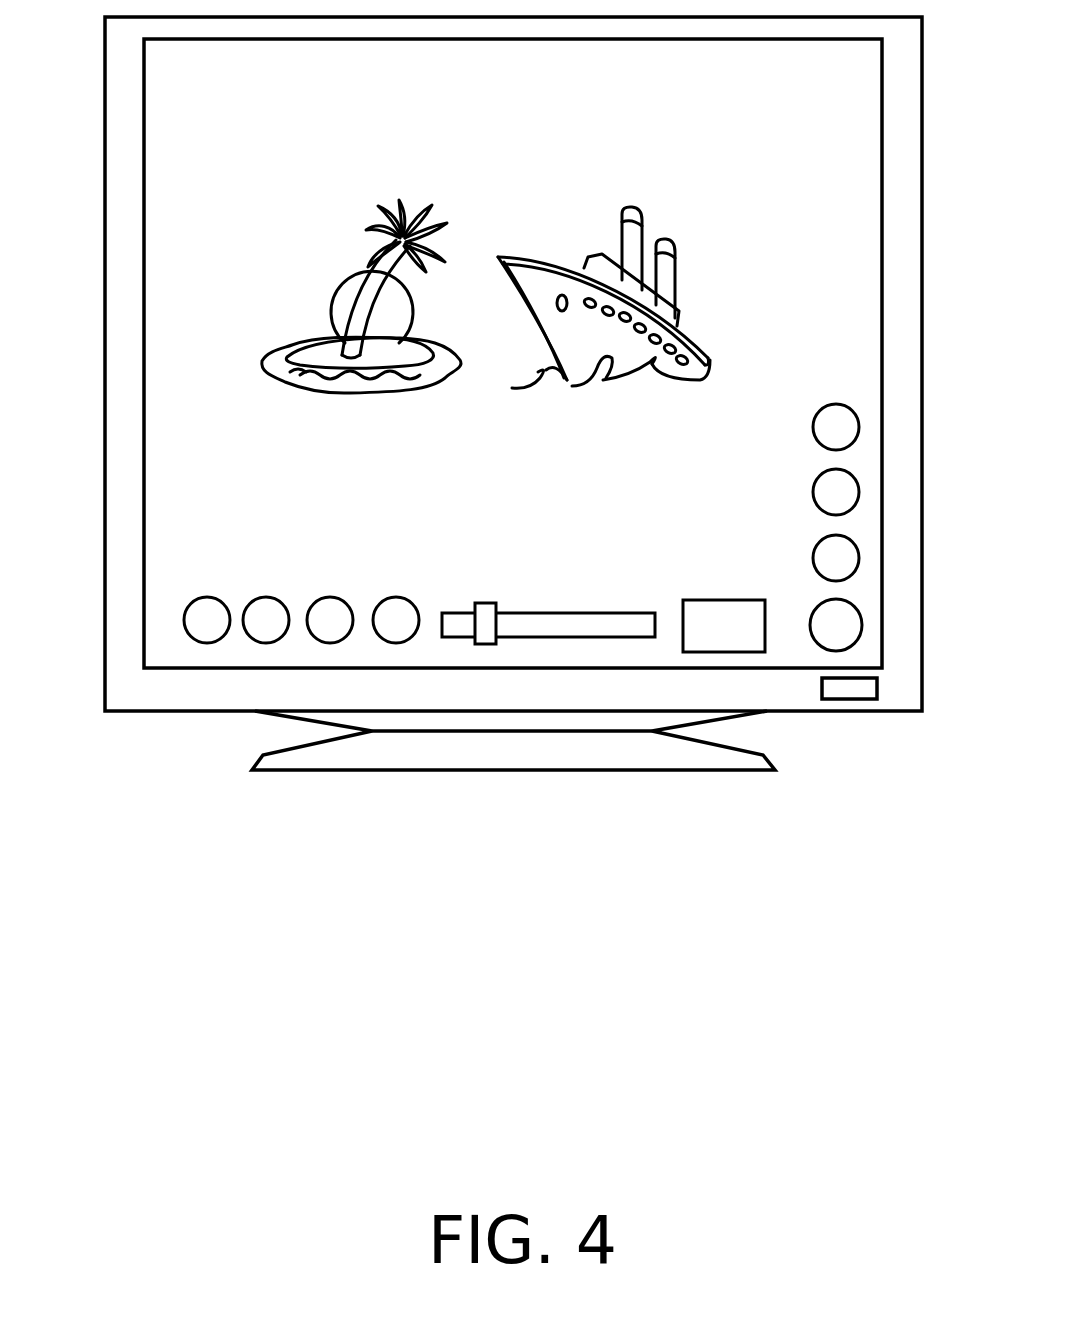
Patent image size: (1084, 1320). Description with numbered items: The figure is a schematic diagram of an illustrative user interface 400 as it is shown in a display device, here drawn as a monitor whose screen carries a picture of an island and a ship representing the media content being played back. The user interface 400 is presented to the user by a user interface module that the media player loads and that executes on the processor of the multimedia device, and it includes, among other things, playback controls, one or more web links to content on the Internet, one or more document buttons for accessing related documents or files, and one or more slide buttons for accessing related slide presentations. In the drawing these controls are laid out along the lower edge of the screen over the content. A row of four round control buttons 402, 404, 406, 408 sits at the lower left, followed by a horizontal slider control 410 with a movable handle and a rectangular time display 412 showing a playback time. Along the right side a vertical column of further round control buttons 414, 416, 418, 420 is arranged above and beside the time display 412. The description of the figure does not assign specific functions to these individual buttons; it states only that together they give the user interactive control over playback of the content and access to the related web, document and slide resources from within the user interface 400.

The user interface 400 is at (176, 636).
The video button 402 is at (207, 597).
The edit button 404 is at (266, 597).
The library button 406 is at (347, 598).
The play button 408 is at (395, 598).
The timeline slider 410 is at (547, 612).
The time indicator 412 is at (712, 600).
The help button 414 is at (818, 604).
The delete button 416 is at (815, 420).
The save button 418 is at (815, 488).
The wireless button 420 is at (820, 535).